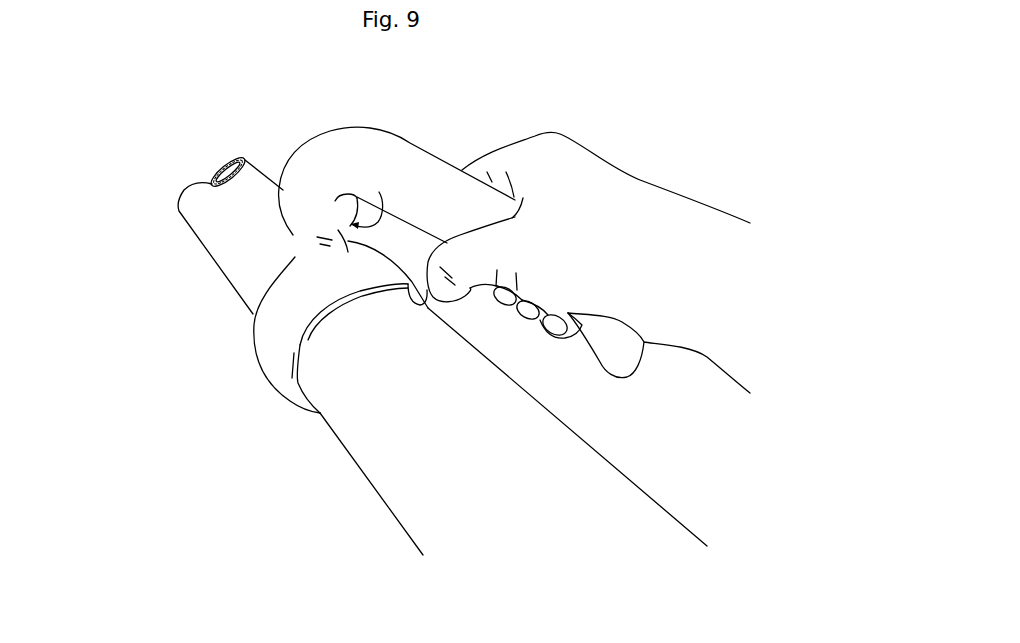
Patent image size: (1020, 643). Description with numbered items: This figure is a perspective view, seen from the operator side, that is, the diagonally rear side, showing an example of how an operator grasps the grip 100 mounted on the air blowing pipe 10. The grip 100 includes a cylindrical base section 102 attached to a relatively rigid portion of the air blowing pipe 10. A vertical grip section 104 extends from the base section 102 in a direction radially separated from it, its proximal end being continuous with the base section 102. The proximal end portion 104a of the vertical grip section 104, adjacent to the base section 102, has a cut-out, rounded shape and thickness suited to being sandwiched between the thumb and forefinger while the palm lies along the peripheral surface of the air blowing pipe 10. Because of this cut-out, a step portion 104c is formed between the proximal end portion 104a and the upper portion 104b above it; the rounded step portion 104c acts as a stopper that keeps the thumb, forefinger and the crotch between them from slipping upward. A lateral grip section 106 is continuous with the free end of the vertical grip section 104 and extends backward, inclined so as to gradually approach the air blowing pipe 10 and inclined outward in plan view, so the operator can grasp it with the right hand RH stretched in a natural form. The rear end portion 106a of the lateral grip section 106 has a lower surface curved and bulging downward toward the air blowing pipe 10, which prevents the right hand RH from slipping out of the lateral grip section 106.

The air blowing pipe 10 is at (378, 494).
The grip 100 is at (324, 247).
The cylindrical base section 102 is at (263, 362).
The vertical grip section 104 is at (295, 163).
The proximal end portion 104a is at (316, 250).
The upper portion 104b is at (316, 223).
The step portion 104c is at (379, 196).
The lateral grip section 106 is at (445, 160).
The rear end portion 106a is at (632, 370).
The right hand RH is at (657, 200).